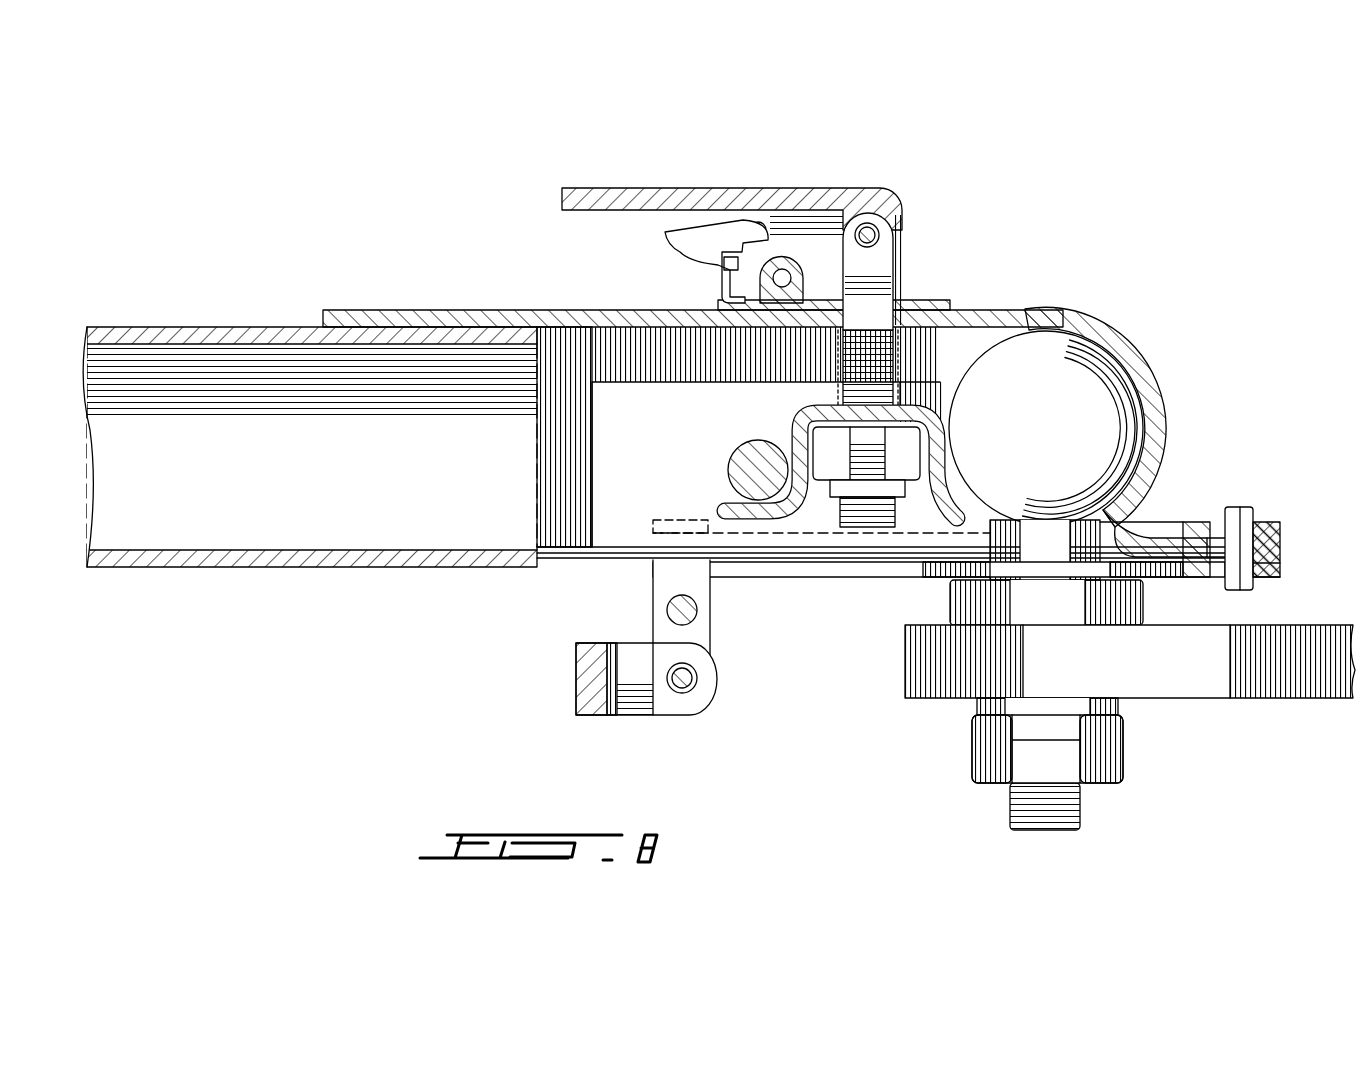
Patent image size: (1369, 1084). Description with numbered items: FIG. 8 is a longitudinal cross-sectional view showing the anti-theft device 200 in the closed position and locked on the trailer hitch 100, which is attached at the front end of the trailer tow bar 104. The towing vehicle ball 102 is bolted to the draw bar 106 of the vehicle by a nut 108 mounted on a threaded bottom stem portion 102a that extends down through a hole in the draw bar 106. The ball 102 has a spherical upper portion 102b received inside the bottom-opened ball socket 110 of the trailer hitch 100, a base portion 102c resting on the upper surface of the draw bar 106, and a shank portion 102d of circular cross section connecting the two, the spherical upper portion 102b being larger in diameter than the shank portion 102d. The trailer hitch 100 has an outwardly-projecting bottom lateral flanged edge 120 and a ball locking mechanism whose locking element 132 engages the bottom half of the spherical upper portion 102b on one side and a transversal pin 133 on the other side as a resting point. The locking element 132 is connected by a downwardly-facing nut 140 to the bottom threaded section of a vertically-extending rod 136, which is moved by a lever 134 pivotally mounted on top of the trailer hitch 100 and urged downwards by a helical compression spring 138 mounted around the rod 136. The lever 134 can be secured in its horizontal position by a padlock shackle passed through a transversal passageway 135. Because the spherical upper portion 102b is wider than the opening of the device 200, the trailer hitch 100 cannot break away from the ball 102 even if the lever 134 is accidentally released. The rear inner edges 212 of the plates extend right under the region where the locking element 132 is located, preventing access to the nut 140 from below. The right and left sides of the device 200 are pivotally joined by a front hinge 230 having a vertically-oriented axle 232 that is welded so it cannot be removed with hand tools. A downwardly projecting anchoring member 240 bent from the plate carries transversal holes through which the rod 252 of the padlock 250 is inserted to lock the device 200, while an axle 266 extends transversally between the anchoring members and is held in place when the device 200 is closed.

The trailer hitch 100 is at (1120, 278).
The towing vehicle ball 102 is at (908, 600).
The threaded bottom stem portion 102a is at (1045, 828).
The spherical upper portion 102b is at (1088, 393).
The base portion 102c is at (1143, 592).
The shank portion 102d is at (1050, 535).
The trailer tow bar 104 is at (262, 562).
The draw bar 106 is at (1232, 672).
The nut 108 is at (985, 752).
The ball socket 110 is at (990, 325).
The bottom lateral flanged edge 120 is at (1185, 530).
The locking element 132 is at (723, 505).
The transversal pin 133 is at (755, 468).
The lever 134 is at (776, 186).
The transversal passageway 135 is at (783, 277).
The rod 136 is at (878, 253).
The helical compression spring 138 is at (830, 398).
The nut 140 is at (913, 445).
The anti-theft device 200 is at (757, 602).
The rear inner edge 212 is at (818, 567).
The front hinge 230 is at (1278, 515).
The axle 232 is at (1245, 550).
The anchoring member 240 is at (700, 692).
The padlock 250 is at (558, 675).
The rod 252 is at (683, 692).
The axle 266 is at (668, 612).